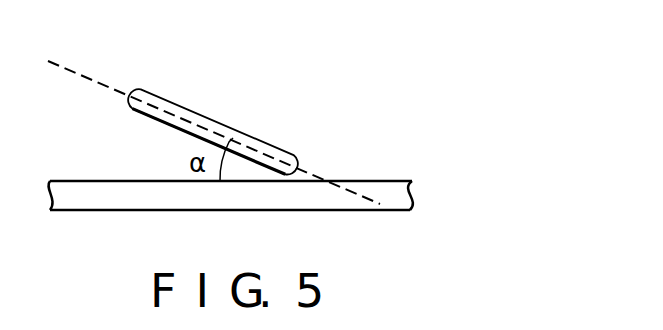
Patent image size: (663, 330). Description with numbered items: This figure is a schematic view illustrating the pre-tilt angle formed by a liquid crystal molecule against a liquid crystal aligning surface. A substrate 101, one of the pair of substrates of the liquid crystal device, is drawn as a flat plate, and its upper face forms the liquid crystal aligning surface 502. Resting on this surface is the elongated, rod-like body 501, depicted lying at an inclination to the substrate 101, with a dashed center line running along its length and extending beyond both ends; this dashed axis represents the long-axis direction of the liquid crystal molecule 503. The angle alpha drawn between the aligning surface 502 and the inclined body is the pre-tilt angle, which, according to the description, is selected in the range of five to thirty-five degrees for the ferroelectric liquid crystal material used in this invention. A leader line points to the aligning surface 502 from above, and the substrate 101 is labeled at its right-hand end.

The substrate 101 is at (413, 193).
The rod-shaped member 501 is at (167, 100).
The liquid crystal aligning surface 502 is at (385, 180).
The liquid crystal molecule 503 is at (70, 68).